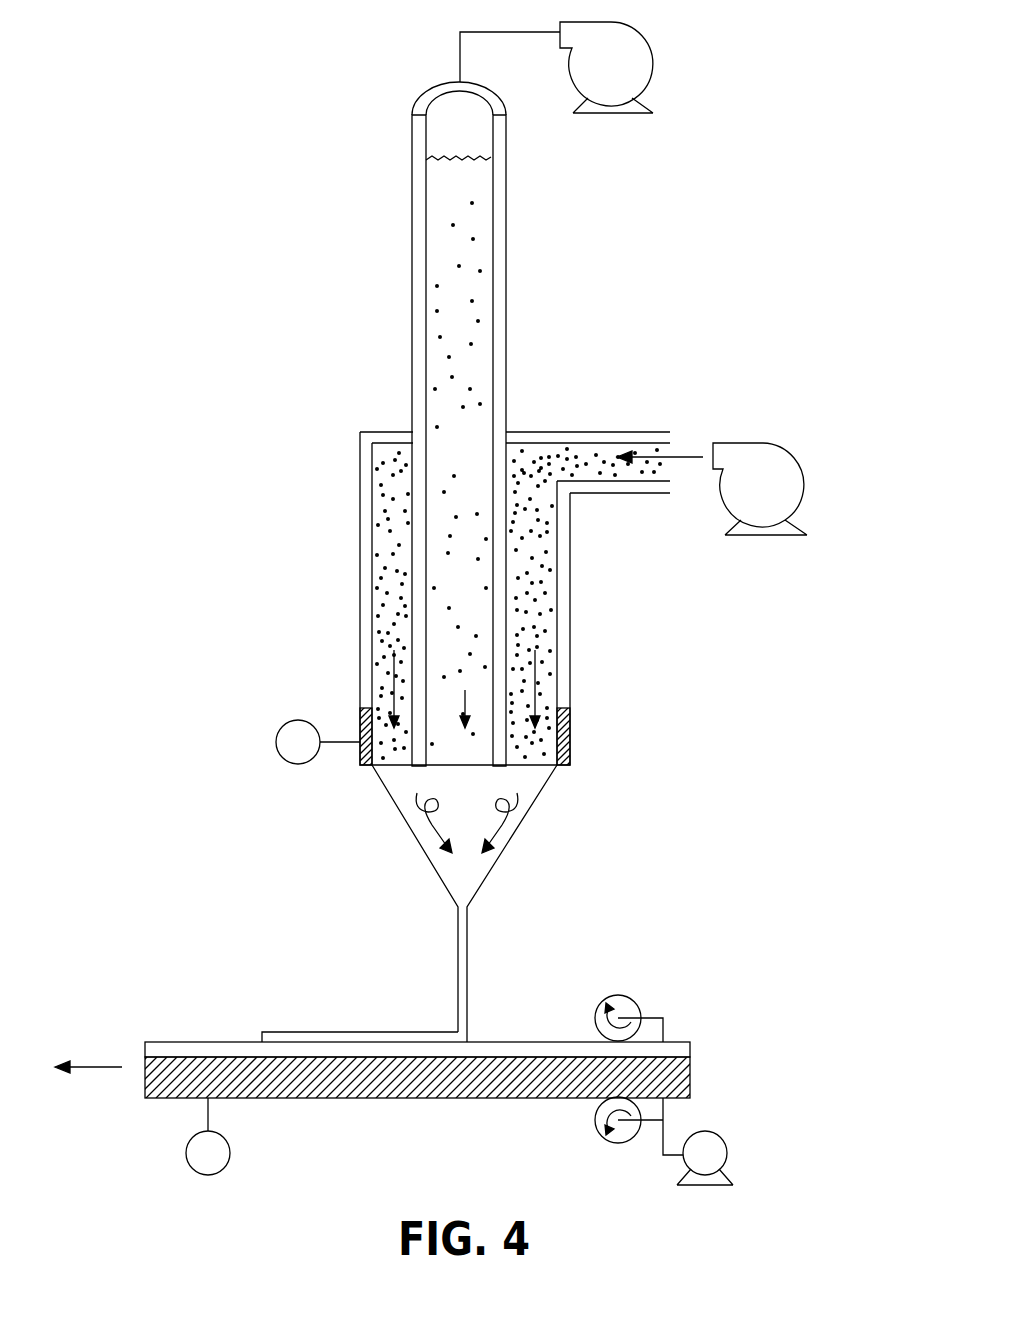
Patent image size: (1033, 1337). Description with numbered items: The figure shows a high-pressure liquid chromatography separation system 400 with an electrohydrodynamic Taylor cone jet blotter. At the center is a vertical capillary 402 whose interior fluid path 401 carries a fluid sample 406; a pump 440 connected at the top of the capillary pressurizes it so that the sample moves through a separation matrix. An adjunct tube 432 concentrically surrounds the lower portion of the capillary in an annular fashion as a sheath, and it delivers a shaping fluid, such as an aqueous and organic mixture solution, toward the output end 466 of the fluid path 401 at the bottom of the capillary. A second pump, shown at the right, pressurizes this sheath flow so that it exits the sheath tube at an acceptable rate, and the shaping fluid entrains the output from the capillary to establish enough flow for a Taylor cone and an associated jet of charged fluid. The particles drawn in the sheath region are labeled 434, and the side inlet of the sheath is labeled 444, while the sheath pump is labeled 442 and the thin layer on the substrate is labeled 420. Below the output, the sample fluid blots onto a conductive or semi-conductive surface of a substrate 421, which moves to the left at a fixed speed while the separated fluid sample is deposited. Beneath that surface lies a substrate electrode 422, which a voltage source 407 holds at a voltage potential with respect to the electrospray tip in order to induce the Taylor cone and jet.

The system 400 is at (295, 82).
The fluid path 401 is at (433, 220).
The capillary 402 is at (413, 180).
The fluid sample 406 is at (478, 265).
The voltage source 407 is at (230, 1153).
The film 420 is at (307, 1030).
The substrate 421 is at (175, 1040).
The substrate electrode 422 is at (167, 1098).
The adjunct tube 432 is at (360, 480).
The particles in housing 434 is at (527, 572).
The pump 440 is at (653, 52).
The pump 442 is at (745, 494).
The inlet pipe 444 is at (642, 495).
The output end 466 is at (463, 766).